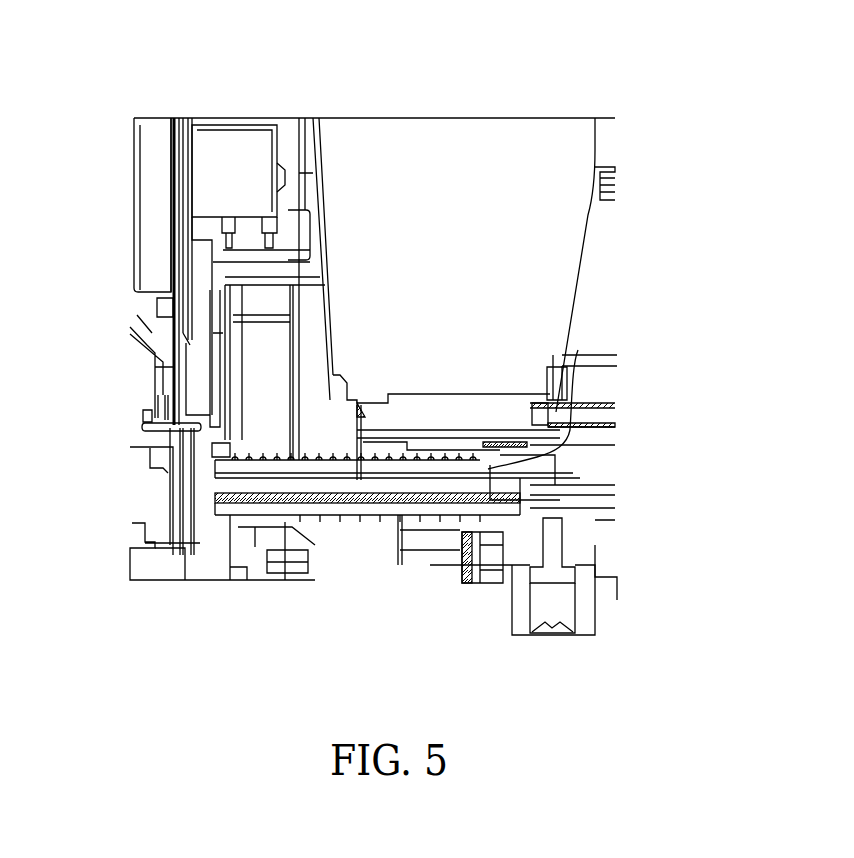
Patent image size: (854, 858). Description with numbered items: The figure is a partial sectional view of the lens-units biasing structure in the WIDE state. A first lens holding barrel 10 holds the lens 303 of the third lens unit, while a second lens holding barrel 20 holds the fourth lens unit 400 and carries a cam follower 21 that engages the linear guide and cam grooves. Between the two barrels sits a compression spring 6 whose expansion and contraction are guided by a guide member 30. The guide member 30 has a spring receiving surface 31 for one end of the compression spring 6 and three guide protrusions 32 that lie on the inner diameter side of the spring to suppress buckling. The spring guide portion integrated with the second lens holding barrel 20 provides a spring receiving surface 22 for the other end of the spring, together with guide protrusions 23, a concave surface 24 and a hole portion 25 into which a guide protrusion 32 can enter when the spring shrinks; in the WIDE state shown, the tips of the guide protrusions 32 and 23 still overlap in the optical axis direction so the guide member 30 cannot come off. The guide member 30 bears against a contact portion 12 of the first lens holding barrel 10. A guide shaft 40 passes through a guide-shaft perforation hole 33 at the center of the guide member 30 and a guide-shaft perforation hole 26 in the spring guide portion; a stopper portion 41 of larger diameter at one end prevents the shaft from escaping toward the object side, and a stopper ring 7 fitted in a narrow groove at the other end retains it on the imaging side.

The lens 303 is at (132, 127).
The guide shaft 40 is at (272, 488).
The compression spring 6 is at (318, 457).
The guide protrusion 23 is at (427, 463).
The fourth lens unit 400 is at (507, 153).
The spring receiving surface 22 is at (580, 348).
The stopper portion 41 is at (470, 450).
The hole portion 25 is at (520, 508).
The stopper ring 7 is at (248, 490).
The guide-shaft perforation hole 33 is at (217, 493).
The first lens holding barrel 10 is at (183, 567).
The contact portion 12 is at (220, 515).
The guide member 30 is at (235, 507).
The spring receiving surface 31 is at (282, 510).
The guide protrusion 32 is at (328, 507).
The concave surface 24 is at (418, 507).
The guide-shaft perforation hole 26 is at (395, 512).
The second lens holding barrel 20 is at (600, 540).
The cam follower 21 is at (588, 630).